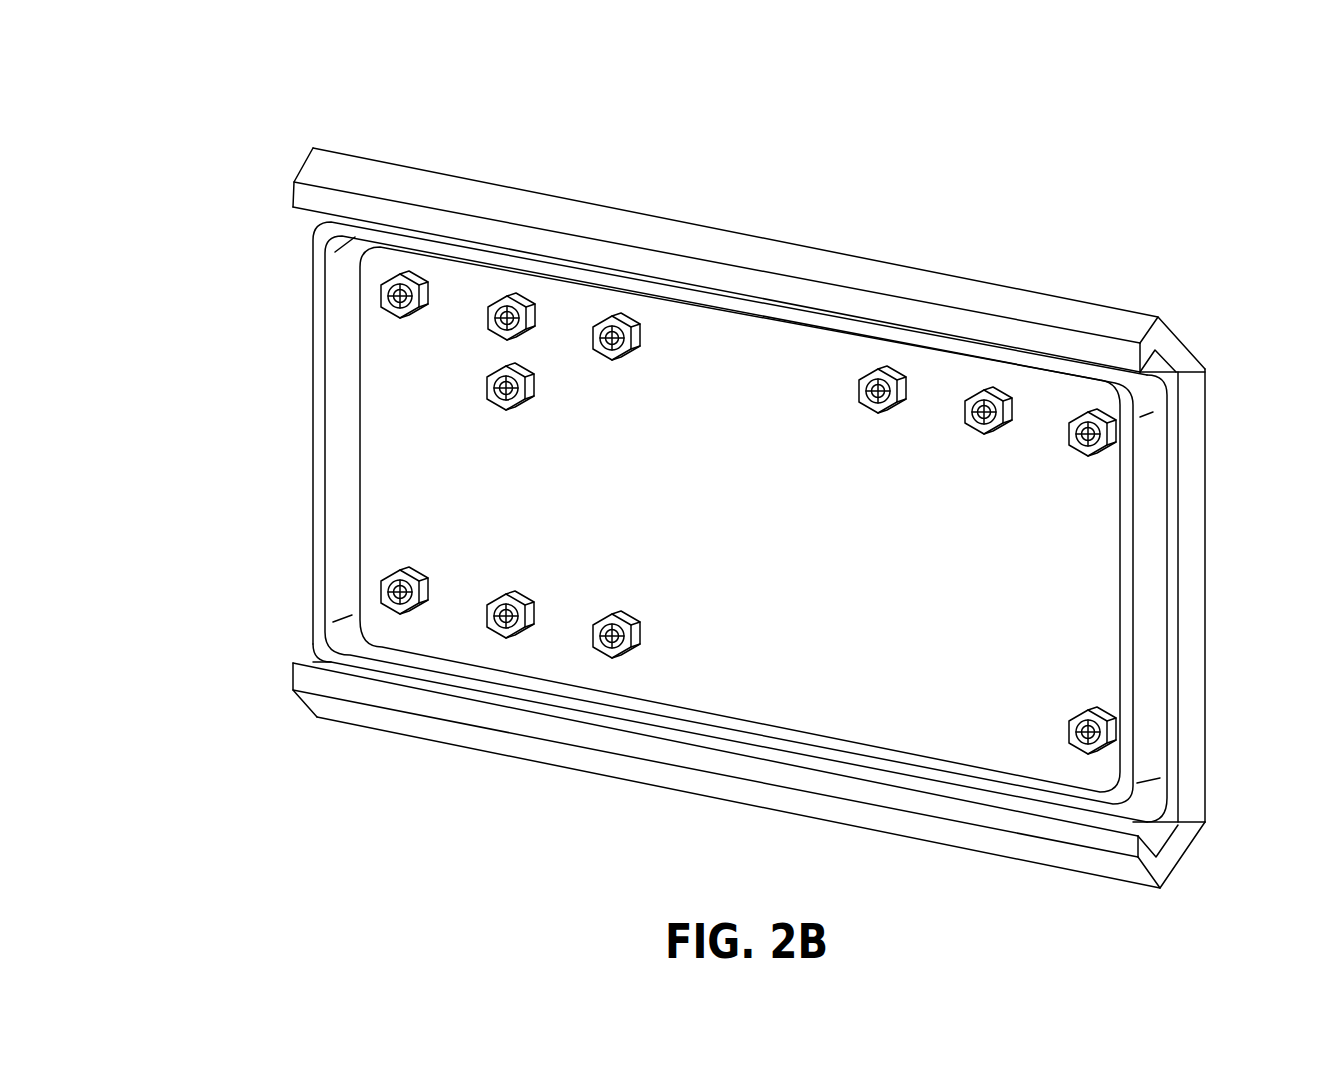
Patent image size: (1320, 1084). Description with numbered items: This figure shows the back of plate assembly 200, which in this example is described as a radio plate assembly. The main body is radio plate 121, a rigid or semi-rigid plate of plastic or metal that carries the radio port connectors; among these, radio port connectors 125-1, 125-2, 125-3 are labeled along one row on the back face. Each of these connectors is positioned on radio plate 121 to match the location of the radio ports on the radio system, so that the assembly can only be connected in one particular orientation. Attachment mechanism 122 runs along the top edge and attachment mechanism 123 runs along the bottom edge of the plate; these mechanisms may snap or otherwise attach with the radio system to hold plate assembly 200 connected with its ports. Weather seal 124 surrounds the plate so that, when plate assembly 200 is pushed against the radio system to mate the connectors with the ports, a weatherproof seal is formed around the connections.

The plate assembly 200 is at (221, 99).
The radio plate 121 is at (560, 500).
The attachment mechanism 122 is at (1148, 332).
The attachment mechanism 123 is at (1183, 860).
The weather seal 124 is at (1135, 505).
The radio port connector 125-1 is at (1073, 441).
The radio port connector 125-2 is at (965, 422).
The radio port connector 125-3 is at (860, 400).